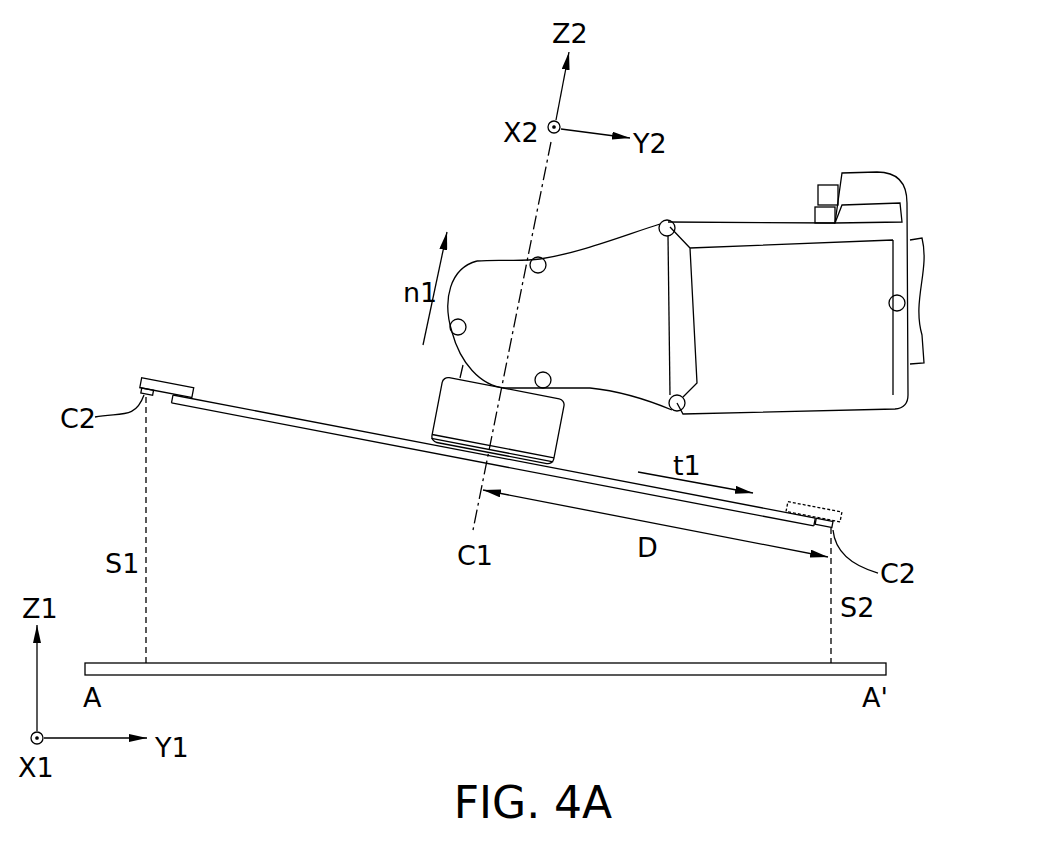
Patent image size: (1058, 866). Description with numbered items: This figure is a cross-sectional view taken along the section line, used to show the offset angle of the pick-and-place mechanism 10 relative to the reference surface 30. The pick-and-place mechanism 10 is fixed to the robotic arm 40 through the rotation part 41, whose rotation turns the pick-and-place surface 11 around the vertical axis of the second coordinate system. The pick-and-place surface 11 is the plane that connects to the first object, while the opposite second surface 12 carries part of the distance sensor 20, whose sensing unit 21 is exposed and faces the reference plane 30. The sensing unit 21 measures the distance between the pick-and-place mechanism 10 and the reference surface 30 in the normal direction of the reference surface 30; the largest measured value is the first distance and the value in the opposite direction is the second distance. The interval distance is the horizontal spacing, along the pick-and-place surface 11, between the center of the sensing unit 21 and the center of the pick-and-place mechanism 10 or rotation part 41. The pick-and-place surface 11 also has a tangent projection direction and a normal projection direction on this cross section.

The pick-and-place mechanism 10 is at (495, 451).
The pick-and-place surface 11 is at (290, 428).
The second surface 12 is at (263, 410).
The distance sensor 20 is at (167, 381).
The sensing unit 21 is at (141, 388).
The reference surface 30 is at (297, 666).
The robotic arm 40 is at (773, 178).
The rotation part 41 is at (533, 440).